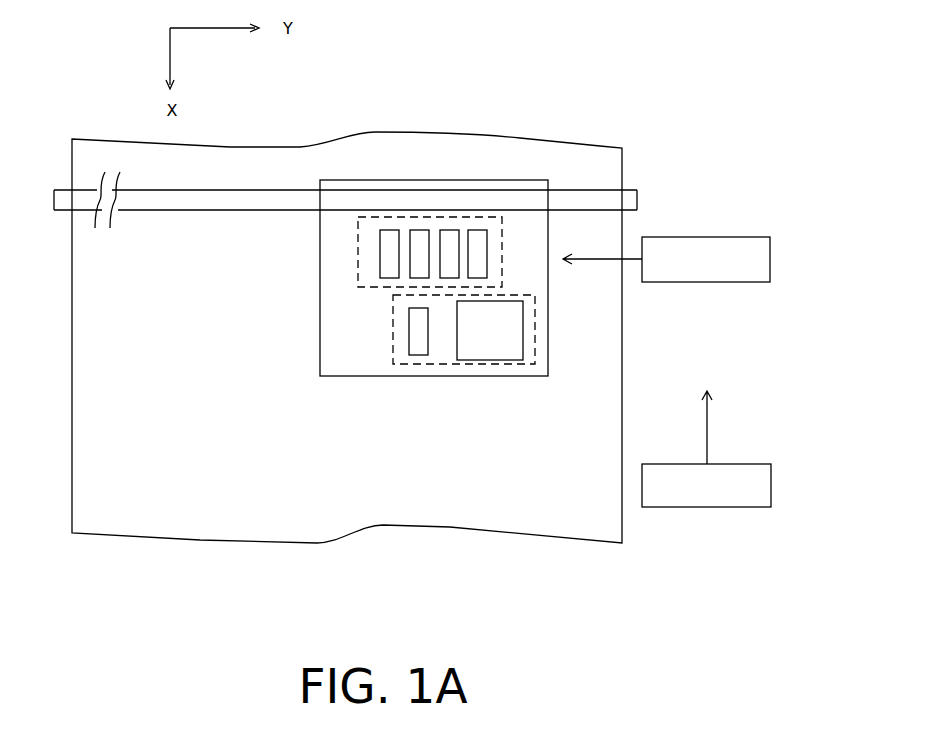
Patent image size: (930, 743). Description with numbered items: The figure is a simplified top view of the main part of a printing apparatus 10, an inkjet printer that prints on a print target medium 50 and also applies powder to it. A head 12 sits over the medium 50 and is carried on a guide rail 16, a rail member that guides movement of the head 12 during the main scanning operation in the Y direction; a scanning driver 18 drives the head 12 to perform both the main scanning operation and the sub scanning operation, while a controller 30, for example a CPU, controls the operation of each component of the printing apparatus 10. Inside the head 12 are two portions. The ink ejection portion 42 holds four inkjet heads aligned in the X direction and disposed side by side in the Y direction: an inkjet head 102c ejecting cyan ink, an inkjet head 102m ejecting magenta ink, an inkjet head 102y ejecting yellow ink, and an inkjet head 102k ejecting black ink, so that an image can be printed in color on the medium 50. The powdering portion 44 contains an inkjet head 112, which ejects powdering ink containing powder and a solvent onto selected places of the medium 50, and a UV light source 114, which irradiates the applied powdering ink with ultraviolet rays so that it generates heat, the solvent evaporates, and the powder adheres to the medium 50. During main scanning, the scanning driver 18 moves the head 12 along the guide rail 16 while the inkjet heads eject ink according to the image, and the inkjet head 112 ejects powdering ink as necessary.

The printing apparatus 10 is at (700, 112).
The head 12 is at (352, 376).
The guide rail 16 is at (176, 200).
The scanning driver 18 is at (698, 237).
The controller 30 is at (763, 464).
The ink ejection portion 42 is at (358, 266).
The powdering portion 44 is at (393, 338).
The medium 50 is at (215, 527).
The inkjet head 102c is at (393, 230).
The inkjet head 102m is at (420, 230).
The inkjet head 102y is at (449, 230).
The inkjet head 102k is at (482, 230).
The inkjet head 112 is at (421, 350).
The UV light source 114 is at (500, 352).